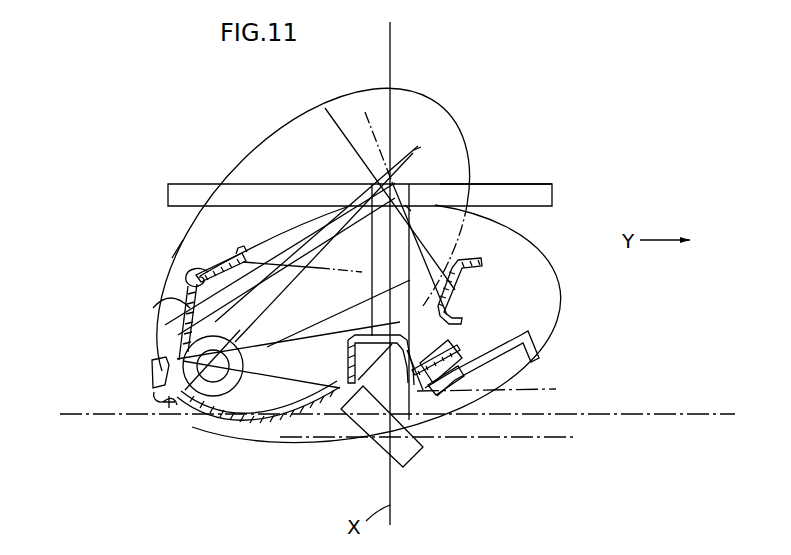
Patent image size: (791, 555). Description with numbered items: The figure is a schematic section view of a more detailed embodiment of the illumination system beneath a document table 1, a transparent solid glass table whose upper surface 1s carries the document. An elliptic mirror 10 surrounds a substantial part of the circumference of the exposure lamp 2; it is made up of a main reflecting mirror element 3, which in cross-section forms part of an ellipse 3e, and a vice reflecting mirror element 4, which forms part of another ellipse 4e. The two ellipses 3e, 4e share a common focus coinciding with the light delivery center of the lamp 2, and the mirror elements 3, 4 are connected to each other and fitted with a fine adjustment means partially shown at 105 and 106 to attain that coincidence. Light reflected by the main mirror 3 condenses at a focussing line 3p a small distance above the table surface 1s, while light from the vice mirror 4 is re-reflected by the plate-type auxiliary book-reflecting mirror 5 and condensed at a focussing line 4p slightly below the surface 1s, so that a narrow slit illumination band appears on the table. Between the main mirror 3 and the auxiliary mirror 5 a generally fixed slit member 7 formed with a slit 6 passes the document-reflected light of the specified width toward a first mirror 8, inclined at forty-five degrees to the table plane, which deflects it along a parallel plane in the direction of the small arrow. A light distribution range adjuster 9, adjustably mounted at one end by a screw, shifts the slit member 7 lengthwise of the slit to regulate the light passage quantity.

The document table 1 is at (517, 181).
The upper surface of document table 1s is at (440, 184).
The exposure lamp 2 is at (228, 388).
The main reflecting mirror element 3 is at (290, 420).
The ellipse of main mirror 3e is at (172, 258).
The focussing line of main mirror 3p is at (418, 146).
The vice reflecting mirror element 4 is at (165, 305).
The ellipse of vice mirror 4e is at (565, 282).
The focussing line of vice mirror 4p is at (410, 214).
The auxiliary reflecting mirror 5 is at (490, 258).
The slit 6 is at (480, 327).
The slit member 7 is at (430, 390).
The first mirror 8 is at (413, 458).
The light distribution range adjuster 9 is at (540, 374).
The elliptic mirror 10 is at (153, 374).
The fine adjustment means 105 is at (169, 406).
The fine adjustment means 106 is at (200, 277).